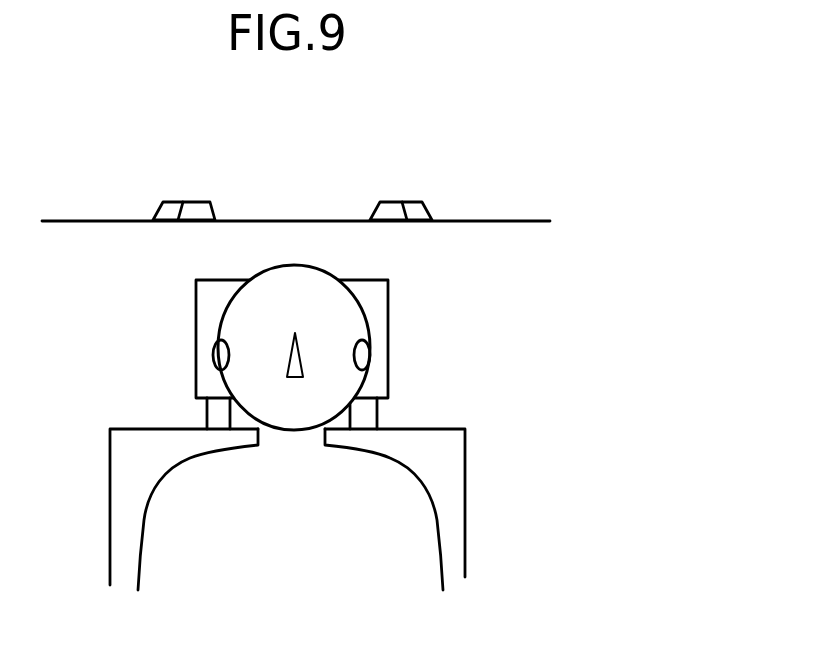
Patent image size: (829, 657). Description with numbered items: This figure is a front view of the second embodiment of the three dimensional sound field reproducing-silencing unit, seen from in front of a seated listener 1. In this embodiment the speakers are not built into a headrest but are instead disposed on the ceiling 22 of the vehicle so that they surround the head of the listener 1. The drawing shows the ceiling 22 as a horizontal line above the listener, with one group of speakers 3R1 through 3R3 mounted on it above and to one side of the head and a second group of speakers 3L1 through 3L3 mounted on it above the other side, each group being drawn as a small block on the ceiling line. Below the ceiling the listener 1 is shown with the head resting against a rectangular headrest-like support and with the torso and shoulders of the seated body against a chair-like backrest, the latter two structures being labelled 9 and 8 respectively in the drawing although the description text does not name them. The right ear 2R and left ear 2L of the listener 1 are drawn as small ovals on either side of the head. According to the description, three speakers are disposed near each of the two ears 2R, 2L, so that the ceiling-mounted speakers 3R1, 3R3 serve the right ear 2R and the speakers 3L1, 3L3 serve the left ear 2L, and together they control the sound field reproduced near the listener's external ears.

The listener 1 is at (160, 538).
The right ear 2R is at (213, 362).
The left ear 2L is at (365, 358).
The speaker 3R1 is at (190, 180).
The speaker 3R3 is at (185, 195).
The speaker 3L1 is at (406, 180).
The speaker 3L3 is at (400, 195).
The seat 8 is at (465, 453).
The headrest 9 is at (382, 318).
The ceiling 22 is at (530, 220).